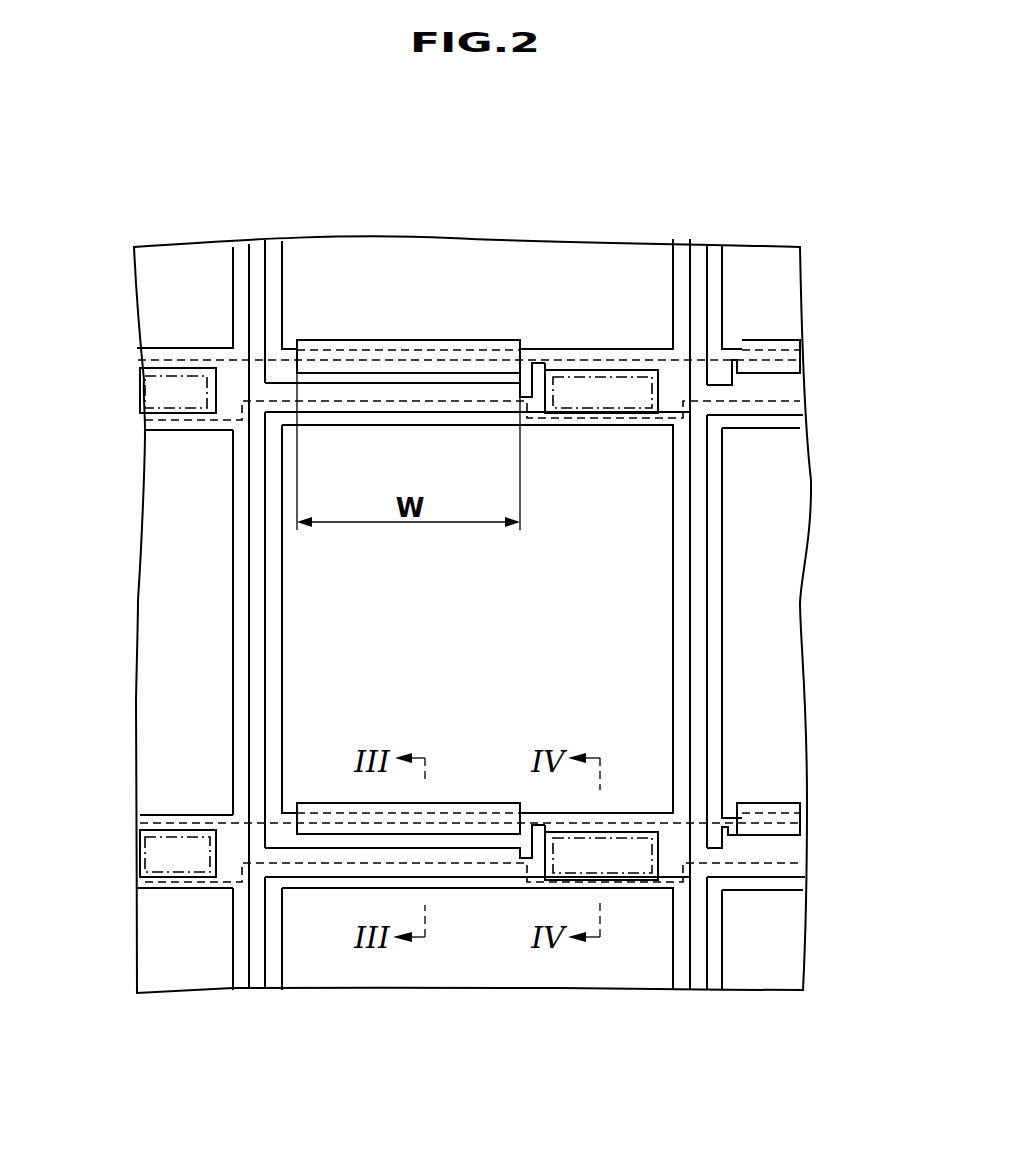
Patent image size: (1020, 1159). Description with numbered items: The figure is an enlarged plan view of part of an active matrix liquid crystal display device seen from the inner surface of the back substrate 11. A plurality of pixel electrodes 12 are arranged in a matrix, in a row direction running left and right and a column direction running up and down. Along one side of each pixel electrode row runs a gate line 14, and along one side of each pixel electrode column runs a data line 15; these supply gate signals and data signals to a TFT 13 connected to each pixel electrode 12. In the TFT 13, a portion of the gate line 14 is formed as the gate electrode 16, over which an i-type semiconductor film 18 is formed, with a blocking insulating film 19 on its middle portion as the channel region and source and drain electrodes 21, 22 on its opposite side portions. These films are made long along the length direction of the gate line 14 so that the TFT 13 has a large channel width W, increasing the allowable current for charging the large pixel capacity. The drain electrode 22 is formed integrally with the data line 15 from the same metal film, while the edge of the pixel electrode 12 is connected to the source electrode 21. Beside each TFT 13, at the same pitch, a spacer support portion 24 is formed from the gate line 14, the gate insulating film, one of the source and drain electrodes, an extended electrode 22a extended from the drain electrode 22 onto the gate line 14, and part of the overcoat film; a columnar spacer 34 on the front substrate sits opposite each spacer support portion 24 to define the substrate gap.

The back substrate 11 is at (797, 246).
The pixel electrode 12 is at (452, 256).
The TFT 13 is at (345, 334).
The gate line 14 is at (758, 398).
The data line 15 is at (250, 558).
The gate electrode 16 is at (364, 402).
The i-type semiconductor film 18 is at (538, 376).
The blocking insulating film 19 is at (414, 377).
The source electrode 21 is at (487, 348).
The drain electrode 22 is at (478, 405).
The extended electrode 22a is at (216, 388).
The spacer support portion 24 is at (183, 362).
The columnar spacer 34 is at (152, 396).